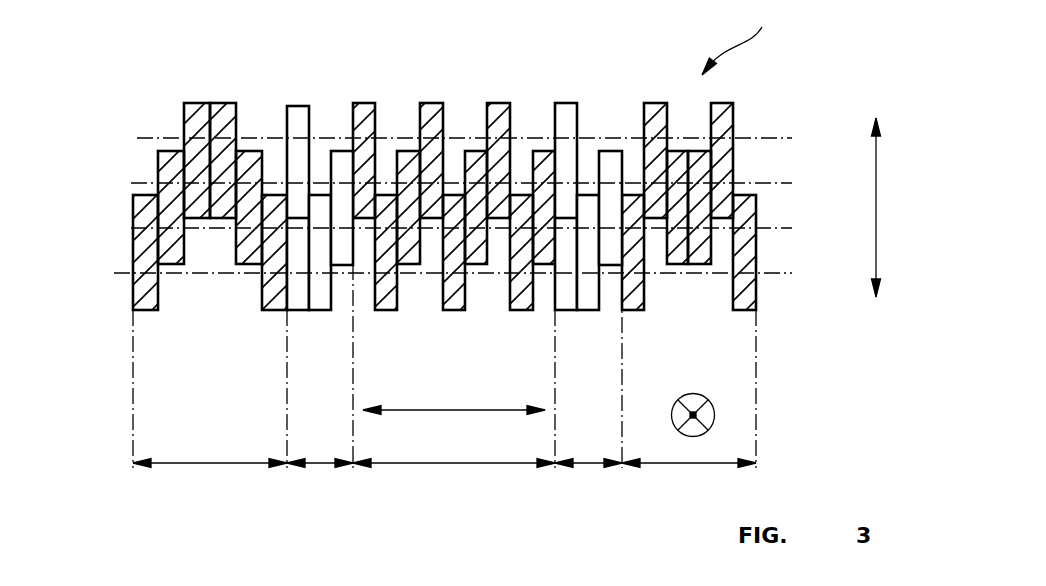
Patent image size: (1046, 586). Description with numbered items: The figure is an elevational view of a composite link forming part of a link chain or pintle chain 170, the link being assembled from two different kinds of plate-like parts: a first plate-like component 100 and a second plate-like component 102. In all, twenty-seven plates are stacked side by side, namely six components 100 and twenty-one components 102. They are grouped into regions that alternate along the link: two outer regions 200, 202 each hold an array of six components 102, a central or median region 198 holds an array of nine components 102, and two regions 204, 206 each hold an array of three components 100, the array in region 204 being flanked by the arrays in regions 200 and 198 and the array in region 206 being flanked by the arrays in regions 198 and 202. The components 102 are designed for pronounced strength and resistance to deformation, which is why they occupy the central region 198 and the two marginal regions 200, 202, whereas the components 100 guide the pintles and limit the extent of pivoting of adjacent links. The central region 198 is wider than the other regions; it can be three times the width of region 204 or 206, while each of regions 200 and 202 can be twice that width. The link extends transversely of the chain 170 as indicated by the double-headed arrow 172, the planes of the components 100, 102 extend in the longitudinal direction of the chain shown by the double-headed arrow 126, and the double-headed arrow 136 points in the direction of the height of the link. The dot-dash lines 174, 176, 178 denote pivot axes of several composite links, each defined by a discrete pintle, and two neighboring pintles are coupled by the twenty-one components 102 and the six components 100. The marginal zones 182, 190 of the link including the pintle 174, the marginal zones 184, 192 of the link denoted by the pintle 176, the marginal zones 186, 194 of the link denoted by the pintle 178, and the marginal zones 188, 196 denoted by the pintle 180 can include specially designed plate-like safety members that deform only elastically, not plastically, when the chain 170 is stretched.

The first plate-like component 100 is at (342, 158).
The second plate-like component 102 is at (271, 200).
The double-headed arrow indicating longitudinal direction 126 is at (873, 252).
The double-headed arrow indicating height direction 136 is at (715, 417).
The link chain 170 is at (747, 37).
The double-headed arrow indicating transverse direction 172 is at (455, 409).
The pivot axis 174 is at (137, 138).
The pivot axis 176 is at (131, 228).
The pivot axis 178 is at (117, 262).
The pintle 180 is at (107, 389).
The marginal zone 182 is at (130, 148).
The marginal zone 184 is at (131, 182).
The marginal zone 186 is at (124, 228).
The marginal zone 188 is at (118, 275).
The marginal zone 190 is at (775, 137).
The marginal zone 192 is at (773, 182).
The marginal zone 194 is at (780, 227).
The marginal zone 196 is at (780, 273).
The central region 198 is at (405, 465).
The outer region 200 is at (217, 465).
The outer region 202 is at (697, 465).
The region 204 is at (320, 465).
The region 206 is at (590, 465).